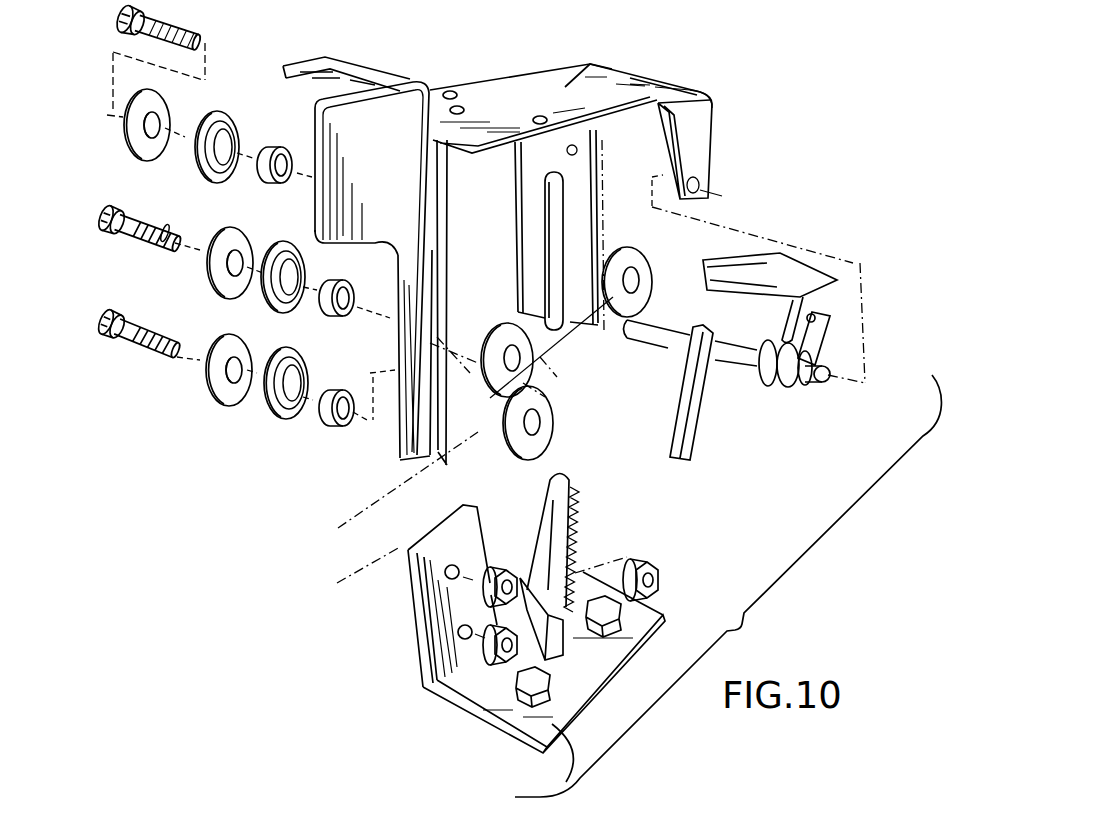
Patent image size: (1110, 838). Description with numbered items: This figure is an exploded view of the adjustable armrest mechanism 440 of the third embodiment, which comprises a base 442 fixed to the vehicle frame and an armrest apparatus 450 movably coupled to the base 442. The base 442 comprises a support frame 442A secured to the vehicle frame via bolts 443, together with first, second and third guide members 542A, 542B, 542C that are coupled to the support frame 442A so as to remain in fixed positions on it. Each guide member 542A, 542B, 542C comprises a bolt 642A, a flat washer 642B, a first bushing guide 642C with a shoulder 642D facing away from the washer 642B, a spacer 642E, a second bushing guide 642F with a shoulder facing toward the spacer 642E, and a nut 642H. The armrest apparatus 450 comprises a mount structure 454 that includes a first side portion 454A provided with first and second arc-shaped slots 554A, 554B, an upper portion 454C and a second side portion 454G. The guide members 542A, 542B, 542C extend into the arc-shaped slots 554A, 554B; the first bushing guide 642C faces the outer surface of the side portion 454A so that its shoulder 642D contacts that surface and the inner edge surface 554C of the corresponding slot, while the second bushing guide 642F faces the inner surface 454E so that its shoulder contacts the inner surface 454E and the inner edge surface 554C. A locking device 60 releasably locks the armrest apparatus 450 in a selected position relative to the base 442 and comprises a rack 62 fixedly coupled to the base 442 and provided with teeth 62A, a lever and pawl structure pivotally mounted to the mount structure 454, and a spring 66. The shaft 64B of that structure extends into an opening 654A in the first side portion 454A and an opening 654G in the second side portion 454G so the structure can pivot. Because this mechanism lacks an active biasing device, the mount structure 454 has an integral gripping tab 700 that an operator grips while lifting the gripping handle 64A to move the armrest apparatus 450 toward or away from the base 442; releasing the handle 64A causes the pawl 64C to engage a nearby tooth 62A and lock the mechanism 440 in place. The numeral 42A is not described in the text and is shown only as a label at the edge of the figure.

The frame member 42A is at (162, 16).
The locking device 60 is at (772, 333).
The rack 62 is at (588, 562).
The teeth 62A is at (580, 550).
The gripping handle 64A is at (698, 300).
The shaft 64B is at (735, 363).
The pawl 64C is at (702, 430).
The spring 66 is at (832, 318).
The adjustable armrest mechanism 440 is at (561, 257).
The base 442 is at (507, 697).
The support frame 442A is at (541, 754).
The bolts 443 is at (600, 638).
The armrest apparatus 450 is at (647, 63).
The mount structure 454 is at (508, 96).
The first side portion 454A is at (413, 430).
The upper portion 454C is at (565, 87).
The inner surface 454E is at (373, 157).
The second side portion 454G is at (729, 153).
The first guide member 542A is at (128, 208).
The second guide member 542B is at (108, 302).
The third guide member 542C is at (238, 112).
The first arc-shaped slot 554A is at (440, 365).
The second arc-shaped slot 554B is at (557, 243).
The inner edge surface 554C is at (551, 230).
The bolt 642A is at (166, 232).
The flat washer 642B is at (162, 130).
The first bushing guide 642C is at (215, 168).
The shoulder 642D is at (235, 168).
The spacer 642E is at (275, 143).
The second bushing guide 642F is at (532, 357).
The nut 642H is at (485, 647).
The opening 654A is at (578, 150).
The opening 654G is at (700, 184).
The gripping tab 700 is at (352, 50).